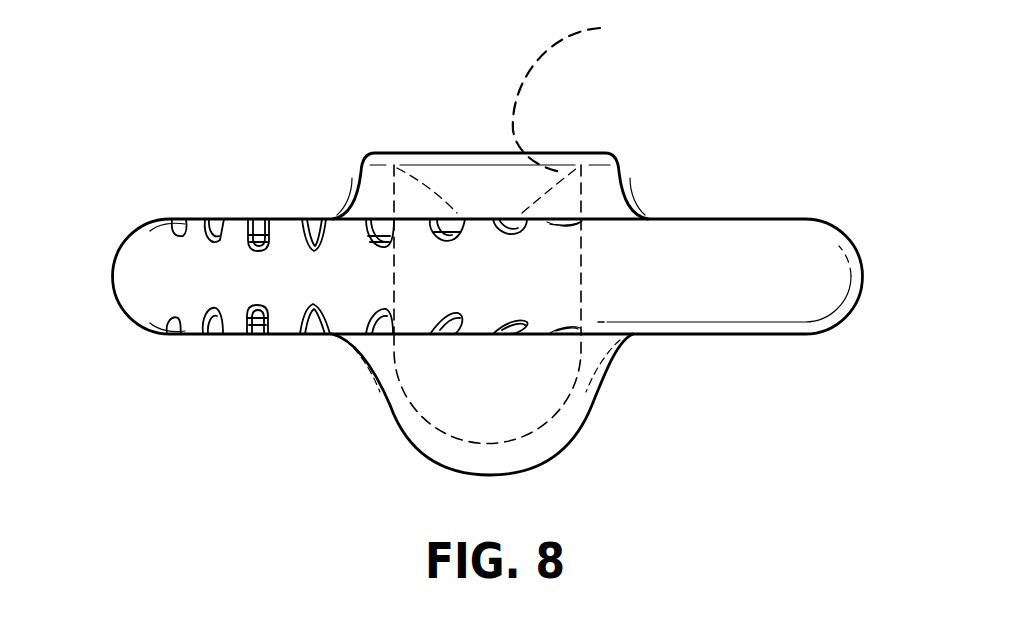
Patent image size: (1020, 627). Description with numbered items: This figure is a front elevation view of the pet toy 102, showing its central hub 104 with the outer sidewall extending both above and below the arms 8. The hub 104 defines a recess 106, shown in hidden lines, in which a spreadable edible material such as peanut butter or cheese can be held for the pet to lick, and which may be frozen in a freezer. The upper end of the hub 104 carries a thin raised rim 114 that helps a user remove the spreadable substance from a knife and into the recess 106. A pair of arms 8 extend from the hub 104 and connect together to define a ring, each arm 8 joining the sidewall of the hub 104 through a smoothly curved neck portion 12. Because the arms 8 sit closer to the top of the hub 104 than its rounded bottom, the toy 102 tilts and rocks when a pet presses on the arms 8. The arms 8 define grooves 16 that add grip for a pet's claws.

The arm 8 is at (133, 255).
The neck portion 12 is at (362, 358).
The grooves 16 is at (313, 221).
The pet toy 102 is at (475, 244).
The hub 104 is at (386, 424).
The recess 106 is at (582, 92).
The raised rim 114 is at (552, 157).